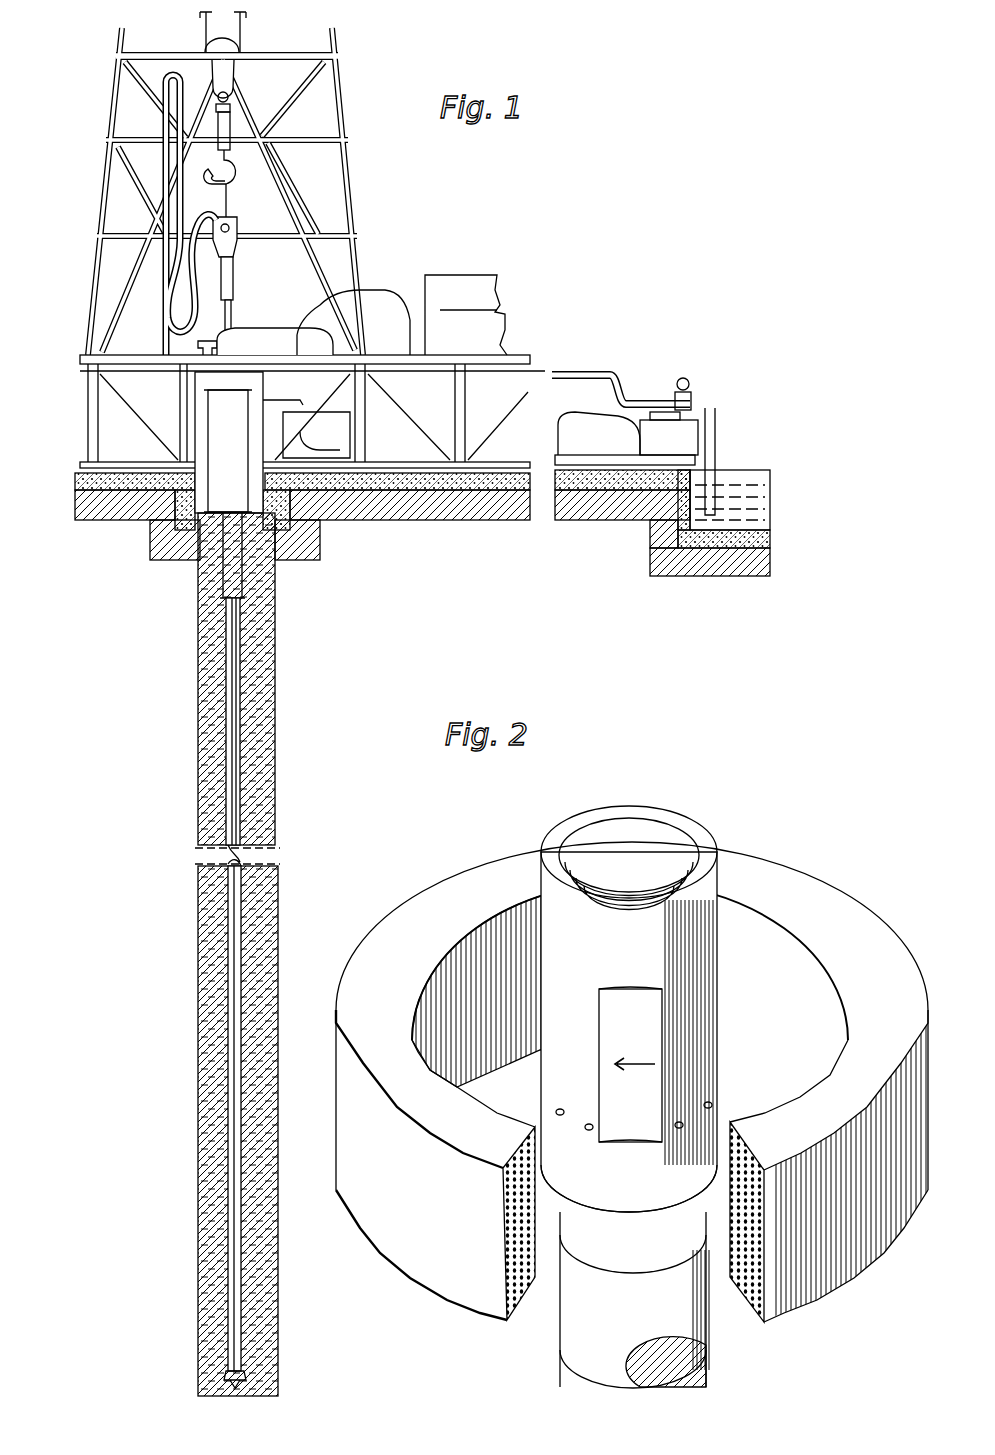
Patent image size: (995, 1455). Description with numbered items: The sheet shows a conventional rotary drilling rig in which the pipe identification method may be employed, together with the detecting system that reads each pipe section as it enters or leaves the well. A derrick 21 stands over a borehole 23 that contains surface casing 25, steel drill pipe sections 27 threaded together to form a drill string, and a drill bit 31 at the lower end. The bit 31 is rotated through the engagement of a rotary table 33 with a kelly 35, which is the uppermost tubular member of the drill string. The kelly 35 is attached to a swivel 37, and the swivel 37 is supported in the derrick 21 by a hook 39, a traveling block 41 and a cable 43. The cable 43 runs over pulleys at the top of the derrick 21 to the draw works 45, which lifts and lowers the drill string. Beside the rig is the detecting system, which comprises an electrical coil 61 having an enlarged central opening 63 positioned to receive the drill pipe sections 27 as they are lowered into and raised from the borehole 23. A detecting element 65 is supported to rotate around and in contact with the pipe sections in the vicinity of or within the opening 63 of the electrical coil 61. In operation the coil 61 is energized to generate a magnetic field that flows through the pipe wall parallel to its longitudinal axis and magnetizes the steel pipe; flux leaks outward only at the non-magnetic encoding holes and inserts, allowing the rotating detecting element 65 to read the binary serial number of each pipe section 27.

In FIG. 1, the derrick 21 is at (340, 90).
In FIG. 1, the borehole 23 is at (230, 730).
In FIG. 1, the surface casing 25 is at (226, 588).
In FIG. 1, the drill pipe sections 27 is at (236, 850).
In FIG. 1, the drill bit 31 is at (232, 1376).
In FIG. 1, the rotary table 33 is at (197, 343).
In FIG. 1, the kelly 35 is at (234, 322).
In FIG. 1, the swivel 37 is at (238, 230).
In FIG. 1, the hook 39 is at (237, 172).
In FIG. 1, the traveling block 41 is at (222, 42).
In FIG. 1, the cable 43 is at (205, 28).
In FIG. 1, the draw works 45 is at (386, 302).
In FIG. 2, the electrical coil 61 is at (866, 916).
In FIG. 2, the central opening 63 is at (778, 935).
In FIG. 2, the detecting element 65 is at (616, 1030).